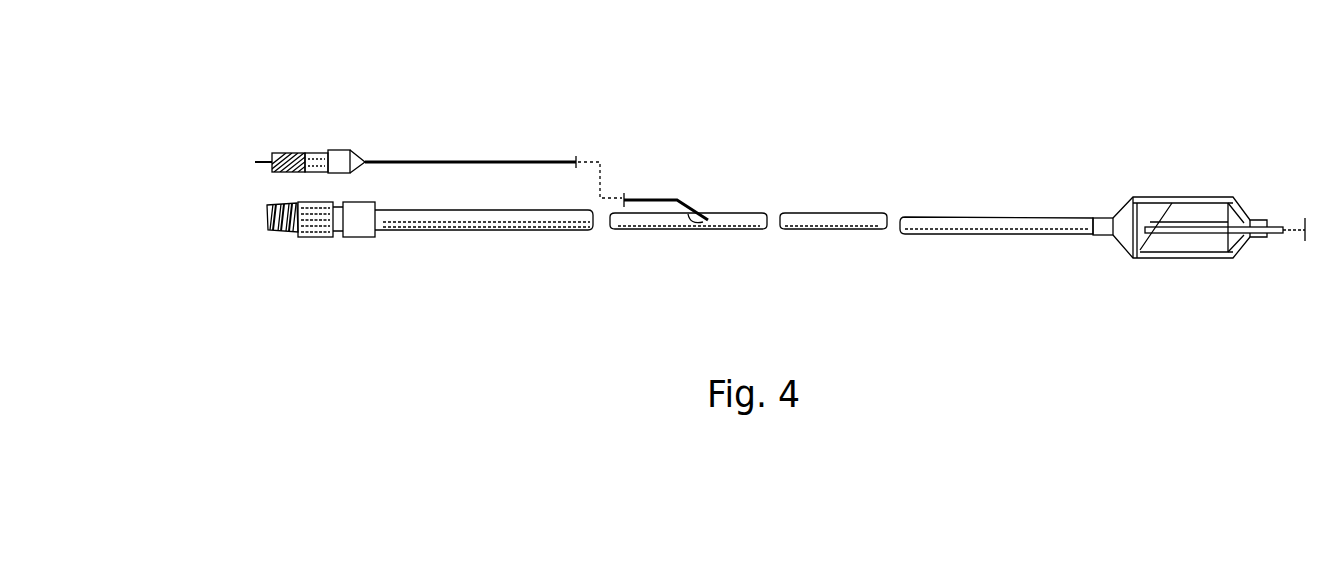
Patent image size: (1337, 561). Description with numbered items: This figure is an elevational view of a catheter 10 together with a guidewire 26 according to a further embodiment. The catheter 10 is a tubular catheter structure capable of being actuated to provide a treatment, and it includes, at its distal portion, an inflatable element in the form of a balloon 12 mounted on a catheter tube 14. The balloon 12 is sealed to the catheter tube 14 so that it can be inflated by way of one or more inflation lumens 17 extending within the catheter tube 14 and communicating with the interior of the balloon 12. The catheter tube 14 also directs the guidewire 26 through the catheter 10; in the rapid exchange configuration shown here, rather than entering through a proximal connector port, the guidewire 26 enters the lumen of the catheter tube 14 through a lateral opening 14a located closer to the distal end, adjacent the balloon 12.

The catheter 10 is at (814, 132).
The balloon 12 is at (1174, 200).
The catheter tube 14 is at (862, 212).
The lateral opening 14a is at (706, 214).
The inflation lumen 17 is at (262, 220).
The guidewire 26 is at (560, 162).